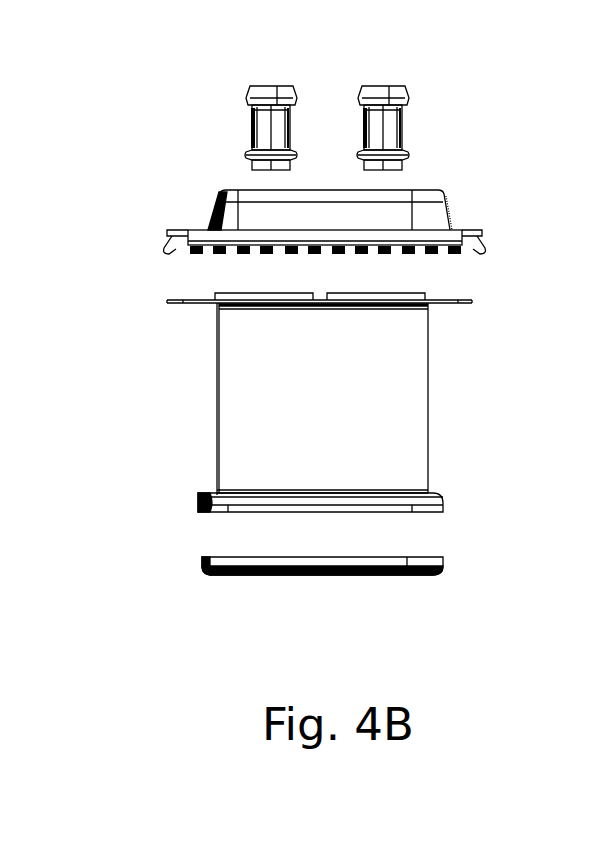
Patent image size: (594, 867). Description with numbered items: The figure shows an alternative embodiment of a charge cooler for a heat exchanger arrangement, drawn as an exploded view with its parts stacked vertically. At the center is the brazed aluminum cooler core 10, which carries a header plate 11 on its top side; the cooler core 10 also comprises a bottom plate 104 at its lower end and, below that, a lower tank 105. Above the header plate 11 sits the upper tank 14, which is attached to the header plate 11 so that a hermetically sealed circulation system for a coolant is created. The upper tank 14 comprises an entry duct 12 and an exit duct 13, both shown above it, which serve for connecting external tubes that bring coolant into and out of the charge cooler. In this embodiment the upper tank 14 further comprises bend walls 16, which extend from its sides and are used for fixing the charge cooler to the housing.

The cooler core 10 is at (226, 413).
The header plate 11 is at (172, 299).
The entry duct 12 is at (248, 100).
The exit duct 13 is at (360, 100).
The upper tank 14 is at (215, 193).
The bend walls 16 is at (487, 240).
The bottom plate 104 is at (203, 498).
The lower tank 105 is at (422, 566).